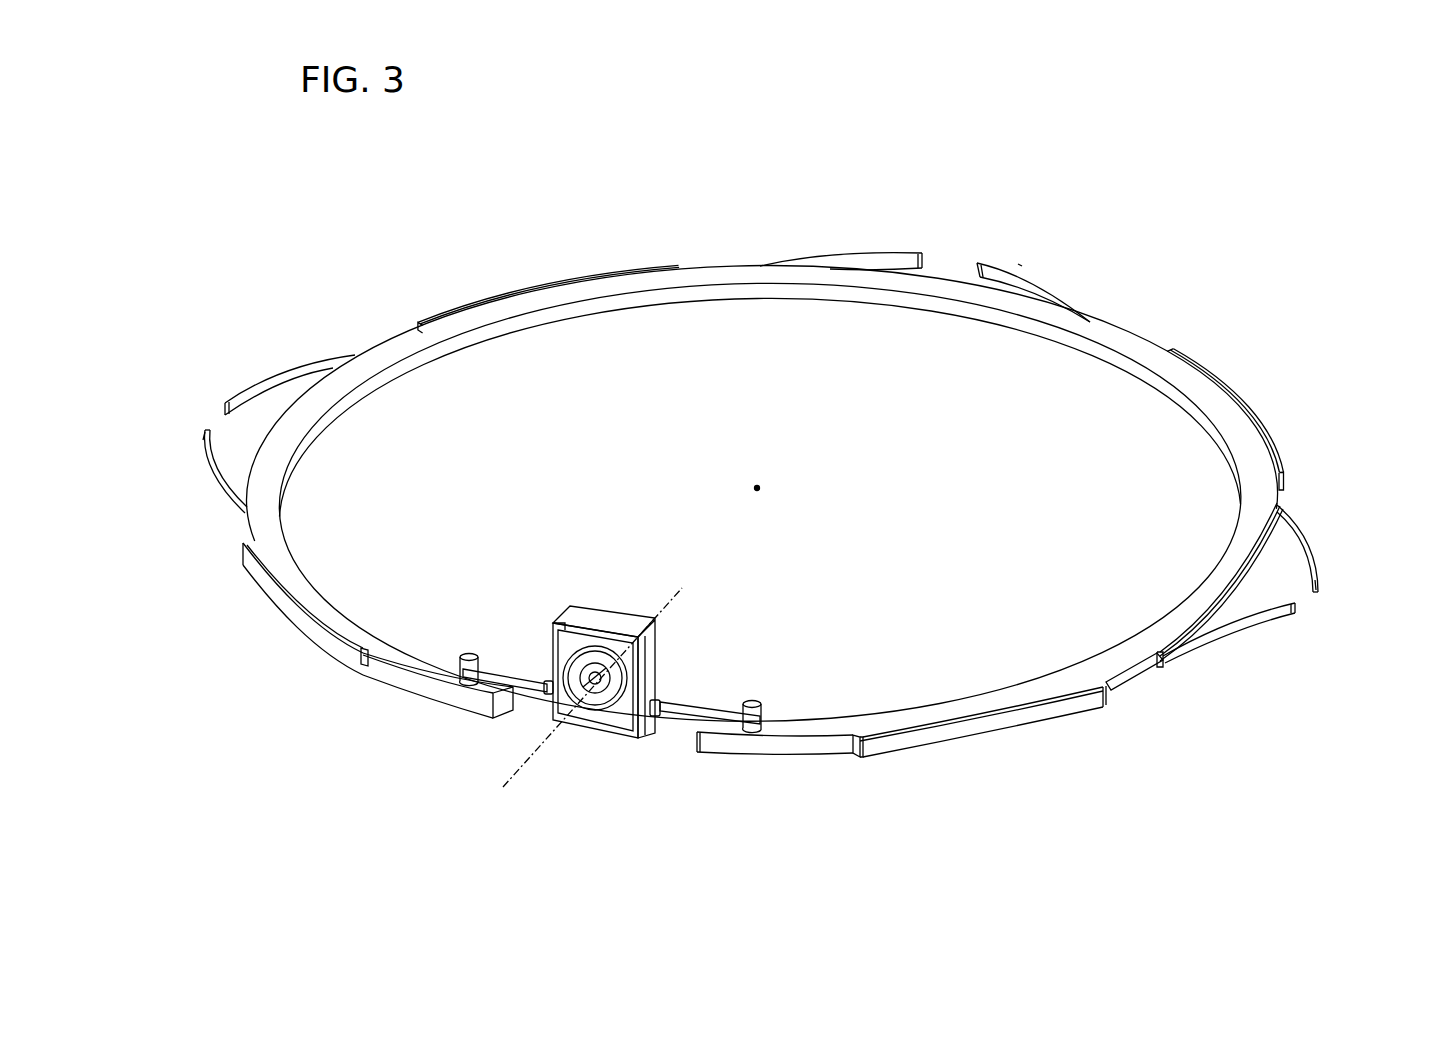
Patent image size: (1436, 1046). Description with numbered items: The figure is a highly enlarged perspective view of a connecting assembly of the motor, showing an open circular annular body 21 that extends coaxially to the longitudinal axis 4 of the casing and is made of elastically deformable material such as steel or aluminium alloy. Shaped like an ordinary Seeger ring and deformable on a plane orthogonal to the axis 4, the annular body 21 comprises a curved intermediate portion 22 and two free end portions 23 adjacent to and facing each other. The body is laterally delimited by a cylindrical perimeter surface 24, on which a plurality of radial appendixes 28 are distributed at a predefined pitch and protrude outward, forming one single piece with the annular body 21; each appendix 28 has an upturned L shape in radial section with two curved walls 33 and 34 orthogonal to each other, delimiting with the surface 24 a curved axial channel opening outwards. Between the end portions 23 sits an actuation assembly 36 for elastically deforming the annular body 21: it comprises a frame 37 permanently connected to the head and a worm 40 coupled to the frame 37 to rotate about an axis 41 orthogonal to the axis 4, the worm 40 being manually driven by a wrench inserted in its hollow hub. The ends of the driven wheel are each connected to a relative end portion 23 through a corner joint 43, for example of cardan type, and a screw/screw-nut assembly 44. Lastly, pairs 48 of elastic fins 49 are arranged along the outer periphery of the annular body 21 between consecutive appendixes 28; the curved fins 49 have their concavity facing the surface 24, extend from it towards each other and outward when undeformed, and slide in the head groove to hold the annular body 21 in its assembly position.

The longitudinal axis 4 is at (758, 486).
The open circular annular body 21 is at (1045, 350).
The curved intermediate portion 22 is at (713, 268).
The free end portions 23 is at (472, 688).
The cylindrical perimeter surface 24 is at (948, 283).
The radial appendixes 28 is at (448, 298).
The curved wall 33 is at (552, 280).
The curved wall 34 is at (366, 661).
The actuation assembly 36 is at (598, 600).
The frame 37 is at (630, 630).
The worm 40 is at (655, 685).
The axis 41 is at (523, 772).
The corner joint 43 is at (545, 677).
The screw/screw-nut assembly 44 is at (486, 660).
The pairs of elastic fins 48 is at (1018, 262).
The elastic fins 49 is at (886, 257).